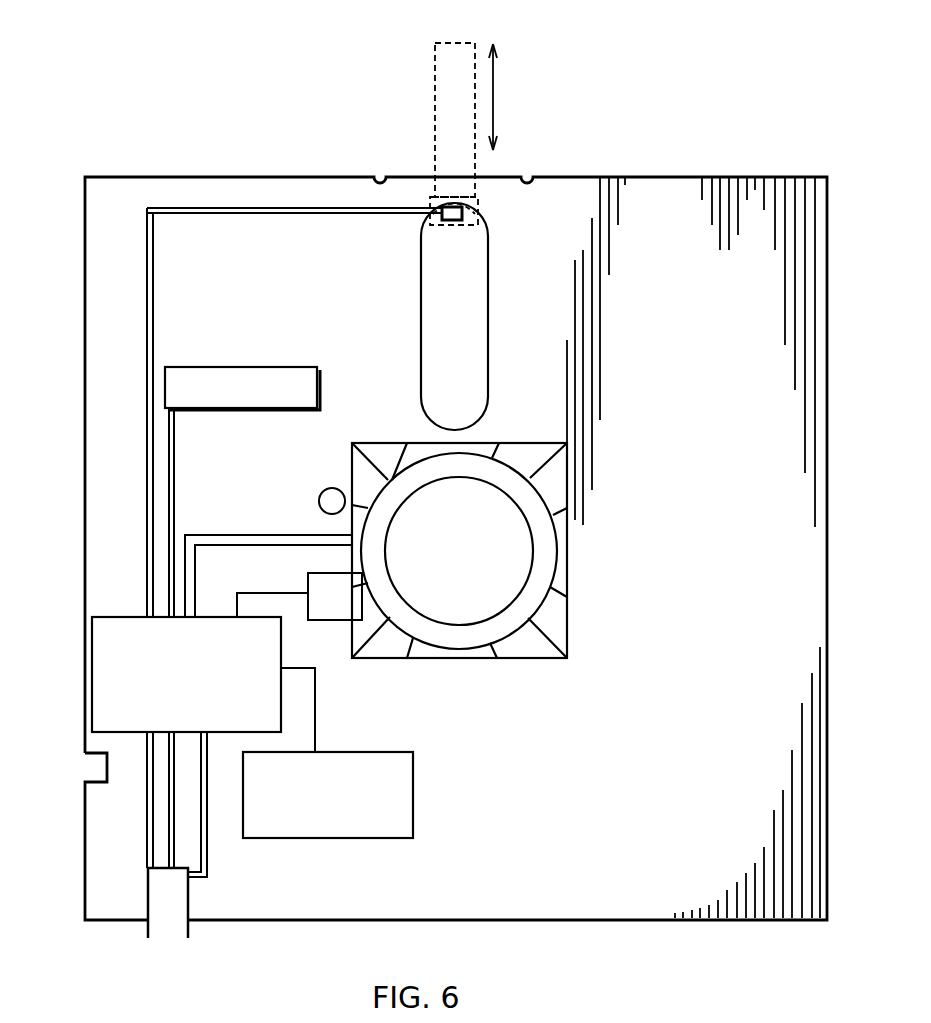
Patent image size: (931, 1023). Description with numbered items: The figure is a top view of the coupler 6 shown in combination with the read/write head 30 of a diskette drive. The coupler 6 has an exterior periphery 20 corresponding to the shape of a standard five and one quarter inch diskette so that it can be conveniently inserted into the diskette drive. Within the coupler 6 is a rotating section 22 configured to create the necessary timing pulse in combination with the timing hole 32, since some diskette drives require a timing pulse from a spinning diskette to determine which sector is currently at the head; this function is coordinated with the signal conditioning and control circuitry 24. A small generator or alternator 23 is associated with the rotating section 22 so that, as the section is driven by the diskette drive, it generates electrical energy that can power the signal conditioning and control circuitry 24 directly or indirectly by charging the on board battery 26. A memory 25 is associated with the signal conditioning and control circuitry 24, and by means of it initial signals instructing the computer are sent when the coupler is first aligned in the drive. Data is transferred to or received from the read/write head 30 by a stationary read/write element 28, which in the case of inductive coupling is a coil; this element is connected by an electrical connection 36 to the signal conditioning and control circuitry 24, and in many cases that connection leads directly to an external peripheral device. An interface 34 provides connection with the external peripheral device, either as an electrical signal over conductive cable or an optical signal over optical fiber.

The coupler 6 is at (838, 391).
The exterior periphery 20 is at (828, 755).
The rotating section 22 is at (543, 572).
The generator or alternator 23 is at (318, 594).
The signal conditioning and control circuitry 24 is at (95, 627).
The memory 25 is at (265, 368).
The on board battery 26 is at (363, 828).
The read/write element 28 is at (462, 215).
The read/write head 30 is at (462, 106).
The timing hole 32 is at (320, 497).
The interface 34 is at (172, 912).
The electrical connection 36 is at (147, 367).